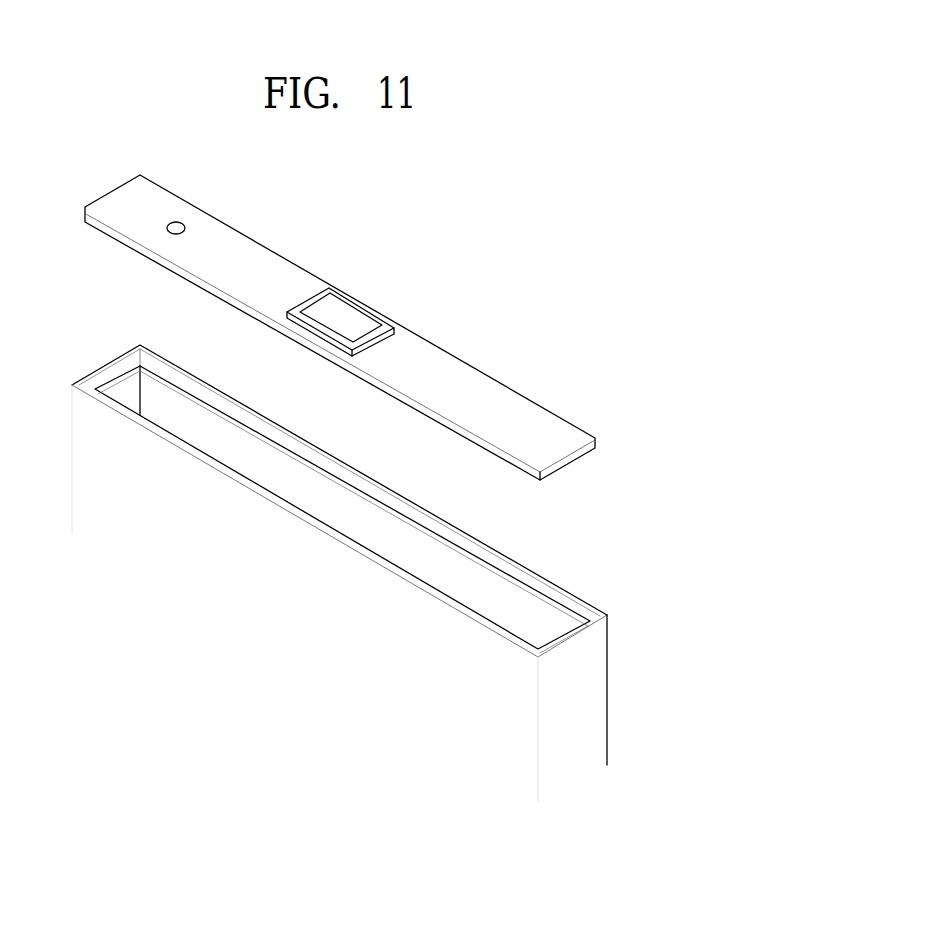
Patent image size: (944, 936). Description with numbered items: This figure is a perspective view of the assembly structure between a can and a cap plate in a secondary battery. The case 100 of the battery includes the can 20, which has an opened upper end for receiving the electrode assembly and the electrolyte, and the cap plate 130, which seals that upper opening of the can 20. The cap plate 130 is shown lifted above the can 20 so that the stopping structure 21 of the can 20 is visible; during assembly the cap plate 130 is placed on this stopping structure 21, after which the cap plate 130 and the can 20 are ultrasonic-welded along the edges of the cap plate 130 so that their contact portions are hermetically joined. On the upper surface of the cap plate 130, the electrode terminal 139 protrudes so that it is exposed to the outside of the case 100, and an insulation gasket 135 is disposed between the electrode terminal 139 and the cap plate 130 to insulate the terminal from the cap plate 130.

The case 100 is at (407, 498).
The can 20 is at (602, 683).
The stopping structure 21 is at (525, 591).
The cap plate 130 is at (511, 394).
The insulation gasket 135 is at (390, 325).
The electrode terminal 139 is at (345, 307).